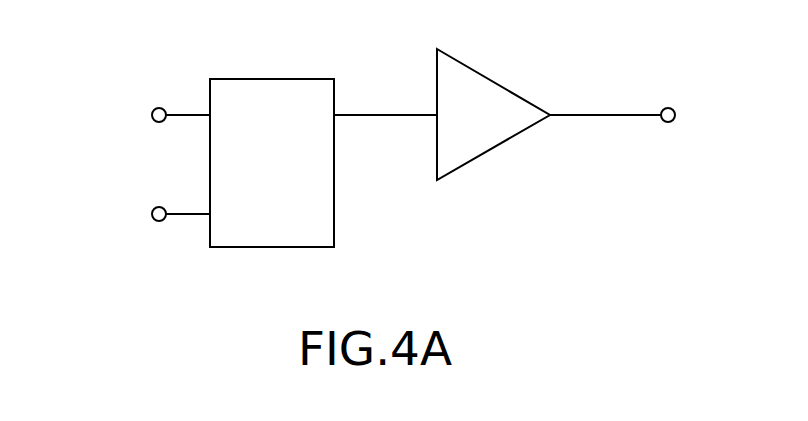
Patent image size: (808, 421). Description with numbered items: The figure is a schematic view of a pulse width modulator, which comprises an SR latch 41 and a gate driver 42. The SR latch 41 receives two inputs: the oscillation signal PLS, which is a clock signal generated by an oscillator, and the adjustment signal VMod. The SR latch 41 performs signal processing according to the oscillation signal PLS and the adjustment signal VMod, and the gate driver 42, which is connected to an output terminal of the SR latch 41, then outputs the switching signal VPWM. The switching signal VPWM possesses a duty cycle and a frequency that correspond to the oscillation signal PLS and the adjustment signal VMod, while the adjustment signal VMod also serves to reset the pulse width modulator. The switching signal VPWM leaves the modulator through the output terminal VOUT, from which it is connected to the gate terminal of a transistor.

The SR latch 41 is at (272, 248).
The gate driver 42 is at (487, 153).
The adjustment signal VMod is at (144, 114).
The oscillation signal PLS is at (146, 214).
The output terminal VOUT is at (641, 91).
The switching signal VPWM is at (603, 117).